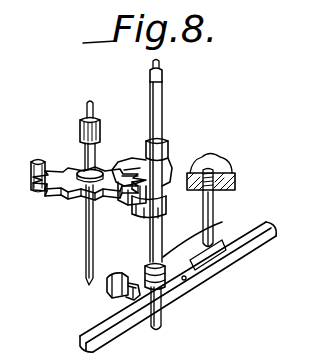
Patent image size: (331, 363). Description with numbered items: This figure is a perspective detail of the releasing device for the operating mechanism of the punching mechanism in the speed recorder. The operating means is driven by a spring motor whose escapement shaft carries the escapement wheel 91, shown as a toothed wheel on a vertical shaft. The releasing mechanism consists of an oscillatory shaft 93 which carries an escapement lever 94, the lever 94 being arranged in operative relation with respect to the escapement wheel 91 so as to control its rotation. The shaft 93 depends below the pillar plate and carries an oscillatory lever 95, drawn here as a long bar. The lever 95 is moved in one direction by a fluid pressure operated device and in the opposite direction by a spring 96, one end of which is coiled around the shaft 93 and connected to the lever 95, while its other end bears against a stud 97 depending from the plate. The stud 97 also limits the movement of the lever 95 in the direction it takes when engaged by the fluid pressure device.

The escapement wheel 91 is at (65, 168).
The oscillatory shaft 93 is at (163, 97).
The escapement lever 94 is at (165, 162).
The oscillatory lever 95 is at (235, 255).
The spring 96 is at (191, 284).
The stud 97 is at (214, 203).